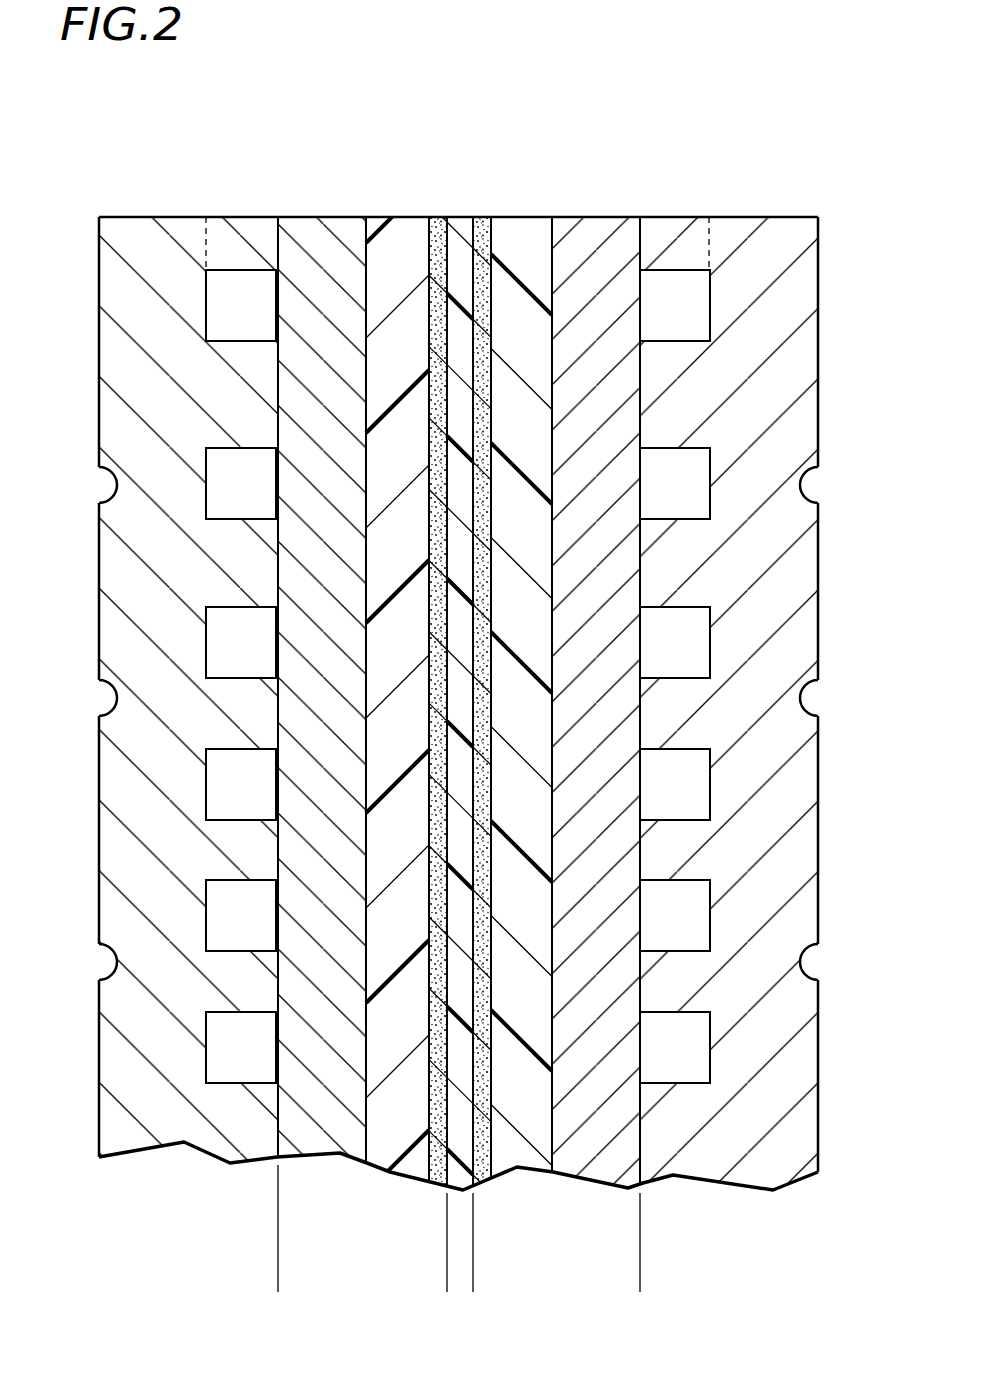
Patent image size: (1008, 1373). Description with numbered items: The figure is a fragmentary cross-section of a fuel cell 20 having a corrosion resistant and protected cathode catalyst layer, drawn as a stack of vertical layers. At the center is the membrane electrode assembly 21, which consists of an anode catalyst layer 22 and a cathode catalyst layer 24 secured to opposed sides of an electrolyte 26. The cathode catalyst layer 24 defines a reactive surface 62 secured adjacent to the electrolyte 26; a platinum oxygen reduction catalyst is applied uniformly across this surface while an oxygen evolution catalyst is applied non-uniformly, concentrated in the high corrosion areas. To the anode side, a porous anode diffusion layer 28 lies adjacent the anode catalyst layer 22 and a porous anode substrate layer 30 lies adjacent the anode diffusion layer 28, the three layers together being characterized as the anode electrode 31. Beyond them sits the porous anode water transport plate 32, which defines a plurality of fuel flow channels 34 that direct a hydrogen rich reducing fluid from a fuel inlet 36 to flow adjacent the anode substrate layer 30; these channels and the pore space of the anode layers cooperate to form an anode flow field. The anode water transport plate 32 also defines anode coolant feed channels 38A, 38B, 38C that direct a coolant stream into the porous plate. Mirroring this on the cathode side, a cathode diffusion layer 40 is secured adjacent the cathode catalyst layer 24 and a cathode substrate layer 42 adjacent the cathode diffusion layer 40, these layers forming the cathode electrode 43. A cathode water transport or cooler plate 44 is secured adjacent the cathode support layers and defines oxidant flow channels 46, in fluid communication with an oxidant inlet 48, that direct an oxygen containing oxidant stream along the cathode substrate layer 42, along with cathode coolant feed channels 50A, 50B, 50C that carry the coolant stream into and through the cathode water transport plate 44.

The fuel cell 20 is at (801, 60).
The membrane electrode assembly 21 is at (463, 741).
The anode catalyst layer 22 is at (447, 1182).
The cathode catalyst layer 24 is at (468, 1148).
The electrolyte 26 is at (457, 1197).
The anode diffusion layer 28 is at (390, 1165).
The anode substrate layer 30 is at (345, 1120).
The anode electrode 31 is at (290, 1282).
The anode water transport plate 32 is at (213, 1135).
The fuel flow channels 34 is at (222, 461).
The fuel inlet 36 is at (227, 232).
The anode coolant feed channel 38A is at (97, 481).
The anode coolant feed channel 38B is at (97, 693).
The anode coolant feed channel 38C is at (98, 959).
The cathode diffusion layer 40 is at (520, 1150).
The cathode substrate layer 42 is at (583, 1152).
The cathode electrode 43 is at (485, 1282).
The cathode water transport plate 44 is at (727, 1160).
The oxidant flow channels 46 is at (695, 461).
The oxidant inlet 48 is at (691, 232).
The cathode coolant feed channel 50A is at (820, 482).
The cathode coolant feed channel 50B is at (820, 695).
The cathode coolant feed channel 50C is at (822, 954).
The reactive surface 62 is at (462, 1167).